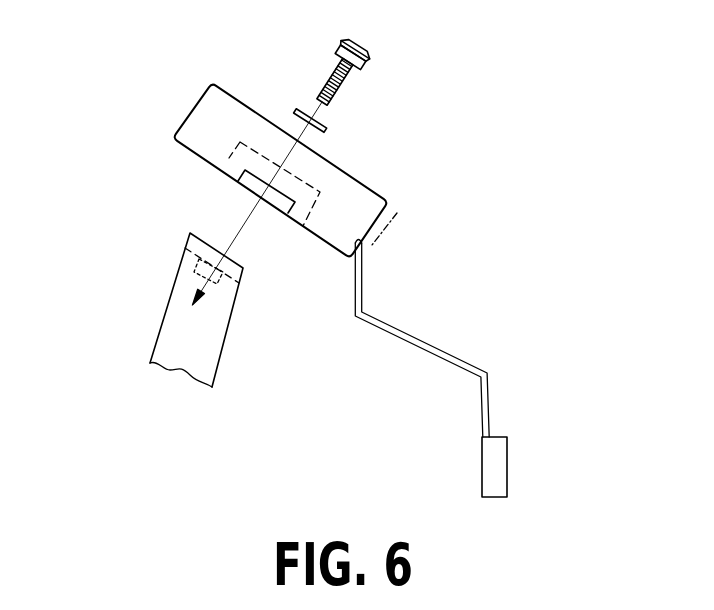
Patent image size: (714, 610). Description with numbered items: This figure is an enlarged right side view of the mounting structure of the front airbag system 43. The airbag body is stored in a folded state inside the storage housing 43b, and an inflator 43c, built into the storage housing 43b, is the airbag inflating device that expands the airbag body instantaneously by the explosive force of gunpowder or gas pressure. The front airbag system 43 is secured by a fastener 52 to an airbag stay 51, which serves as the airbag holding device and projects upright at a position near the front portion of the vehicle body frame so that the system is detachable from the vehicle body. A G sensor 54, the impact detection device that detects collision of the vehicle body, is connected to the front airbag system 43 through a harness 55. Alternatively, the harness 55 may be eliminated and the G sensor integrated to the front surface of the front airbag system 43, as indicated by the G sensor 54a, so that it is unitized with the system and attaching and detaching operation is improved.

The front airbag system 43 is at (236, 142).
The storage housing 43b is at (244, 103).
The inflator 43c is at (228, 152).
The bolt 52 is at (343, 90).
The airbag stay 51 is at (165, 311).
The G sensor 54a is at (385, 235).
The harness 55 is at (443, 352).
The G sensor 54 is at (508, 462).